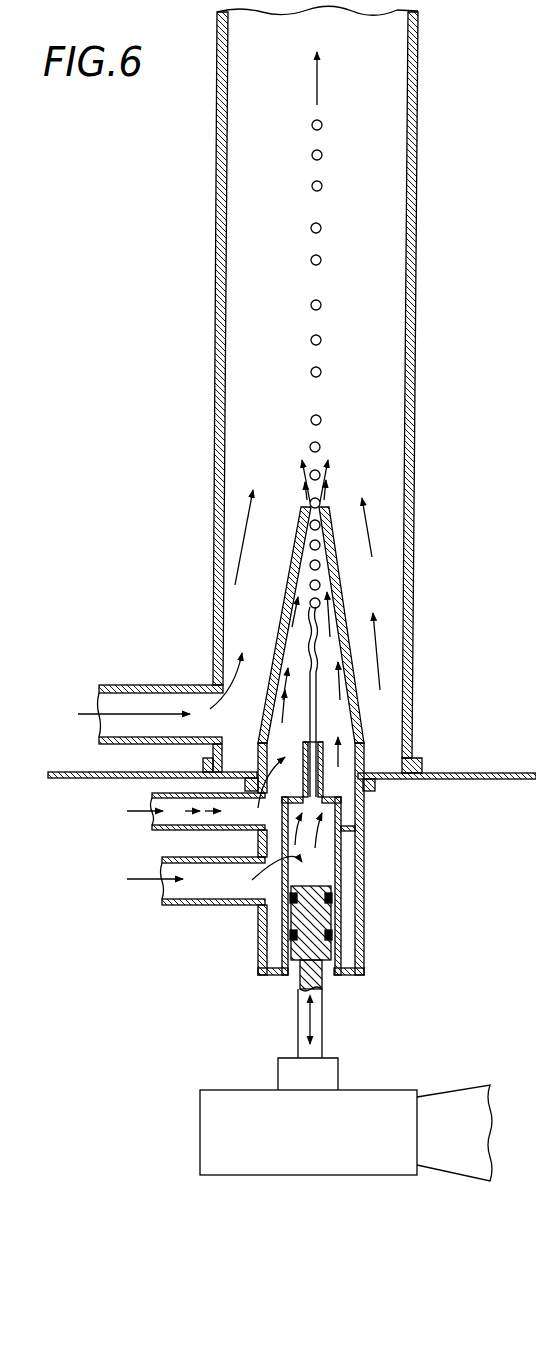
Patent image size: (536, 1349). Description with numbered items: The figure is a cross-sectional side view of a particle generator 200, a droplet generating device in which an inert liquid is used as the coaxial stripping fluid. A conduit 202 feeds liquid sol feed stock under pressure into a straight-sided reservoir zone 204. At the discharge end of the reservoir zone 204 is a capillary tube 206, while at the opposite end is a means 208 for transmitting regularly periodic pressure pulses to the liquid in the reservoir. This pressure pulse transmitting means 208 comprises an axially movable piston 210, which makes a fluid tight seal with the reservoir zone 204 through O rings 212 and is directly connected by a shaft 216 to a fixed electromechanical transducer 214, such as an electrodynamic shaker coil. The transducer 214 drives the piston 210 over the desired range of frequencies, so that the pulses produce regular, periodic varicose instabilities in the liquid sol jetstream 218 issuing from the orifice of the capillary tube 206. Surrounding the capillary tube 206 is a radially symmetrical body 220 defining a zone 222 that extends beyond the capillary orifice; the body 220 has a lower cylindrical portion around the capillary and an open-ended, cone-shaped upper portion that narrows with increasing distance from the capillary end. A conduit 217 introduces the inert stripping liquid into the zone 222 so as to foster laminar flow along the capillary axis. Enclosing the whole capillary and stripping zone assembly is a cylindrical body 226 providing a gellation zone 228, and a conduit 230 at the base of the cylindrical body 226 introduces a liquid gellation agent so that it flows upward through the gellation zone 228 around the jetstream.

The particle generator 200 is at (188, 413).
The conduit 202 is at (193, 905).
The reservoir zone 204 is at (322, 866).
The capillary tube 206 is at (362, 745).
The means for transmitting regularly periodic pressure pulses 208 is at (320, 1024).
The piston 210 is at (322, 950).
The O rings 212 is at (331, 897).
The electromechanical transducer 214 is at (315, 1162).
The shaft 216 is at (298, 1022).
The conduit 217 is at (153, 821).
The liquid sol jetstream 218 is at (314, 706).
The radially symmetrical body 220 is at (323, 756).
The zone 222 is at (285, 652).
The cylindrical body 226 is at (413, 476).
The gellation zone 228 is at (382, 281).
The conduit 230 is at (116, 682).